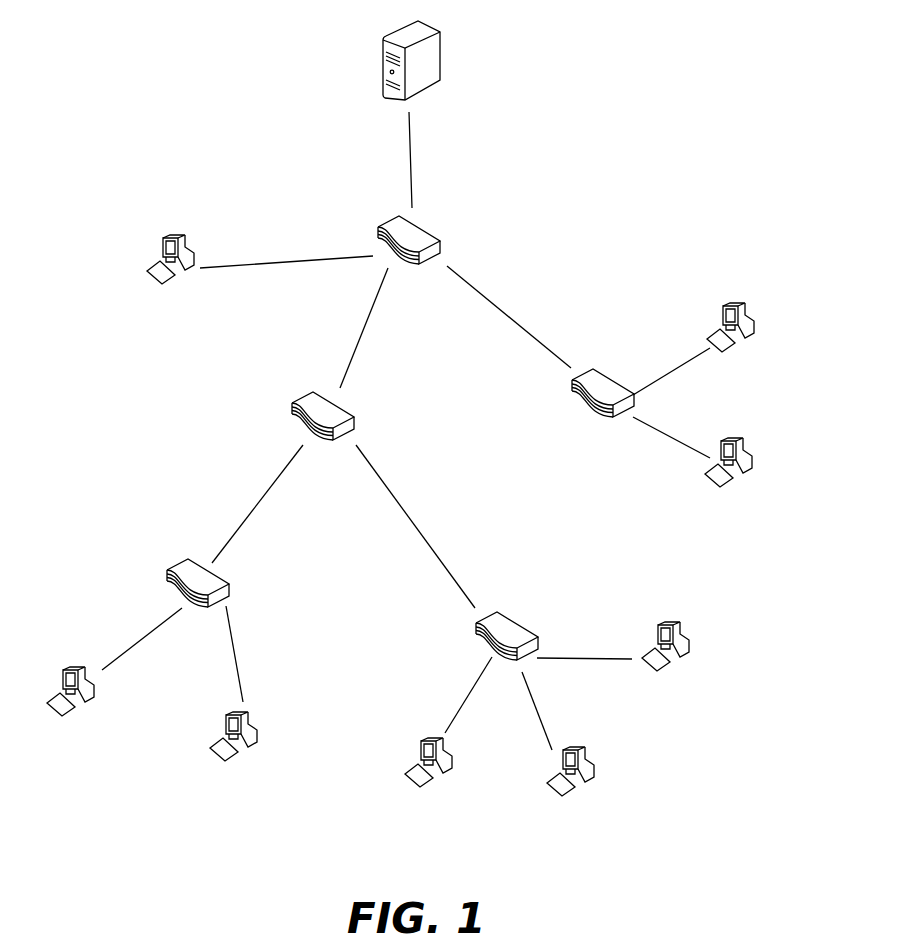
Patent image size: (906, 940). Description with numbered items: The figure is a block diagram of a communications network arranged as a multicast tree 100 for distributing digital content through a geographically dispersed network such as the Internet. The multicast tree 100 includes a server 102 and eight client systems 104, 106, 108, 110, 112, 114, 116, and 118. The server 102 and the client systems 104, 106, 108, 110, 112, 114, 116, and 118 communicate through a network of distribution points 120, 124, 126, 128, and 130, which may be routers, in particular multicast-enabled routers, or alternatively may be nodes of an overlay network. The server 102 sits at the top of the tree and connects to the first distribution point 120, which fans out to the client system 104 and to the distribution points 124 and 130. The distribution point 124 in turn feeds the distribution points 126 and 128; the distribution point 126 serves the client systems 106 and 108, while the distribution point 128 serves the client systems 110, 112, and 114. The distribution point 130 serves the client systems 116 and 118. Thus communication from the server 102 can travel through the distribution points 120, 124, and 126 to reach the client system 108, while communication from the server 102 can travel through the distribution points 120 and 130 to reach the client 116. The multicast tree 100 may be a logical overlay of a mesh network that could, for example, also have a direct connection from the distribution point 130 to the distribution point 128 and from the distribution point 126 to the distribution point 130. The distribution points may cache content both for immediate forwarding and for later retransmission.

The multicast tree 100 is at (634, 117).
The server 102 is at (432, 28).
The client system 104 is at (183, 235).
The client system 106 is at (68, 667).
The client system 108 is at (247, 715).
The client system 110 is at (442, 742).
The client system 112 is at (585, 748).
The client system 114 is at (678, 628).
The client system 116 is at (733, 438).
The client system 118 is at (728, 303).
The distribution point 120 is at (448, 232).
The distribution point 124 is at (333, 408).
The distribution point 126 is at (223, 575).
The distribution point 128 is at (515, 622).
The distribution point 130 is at (598, 372).